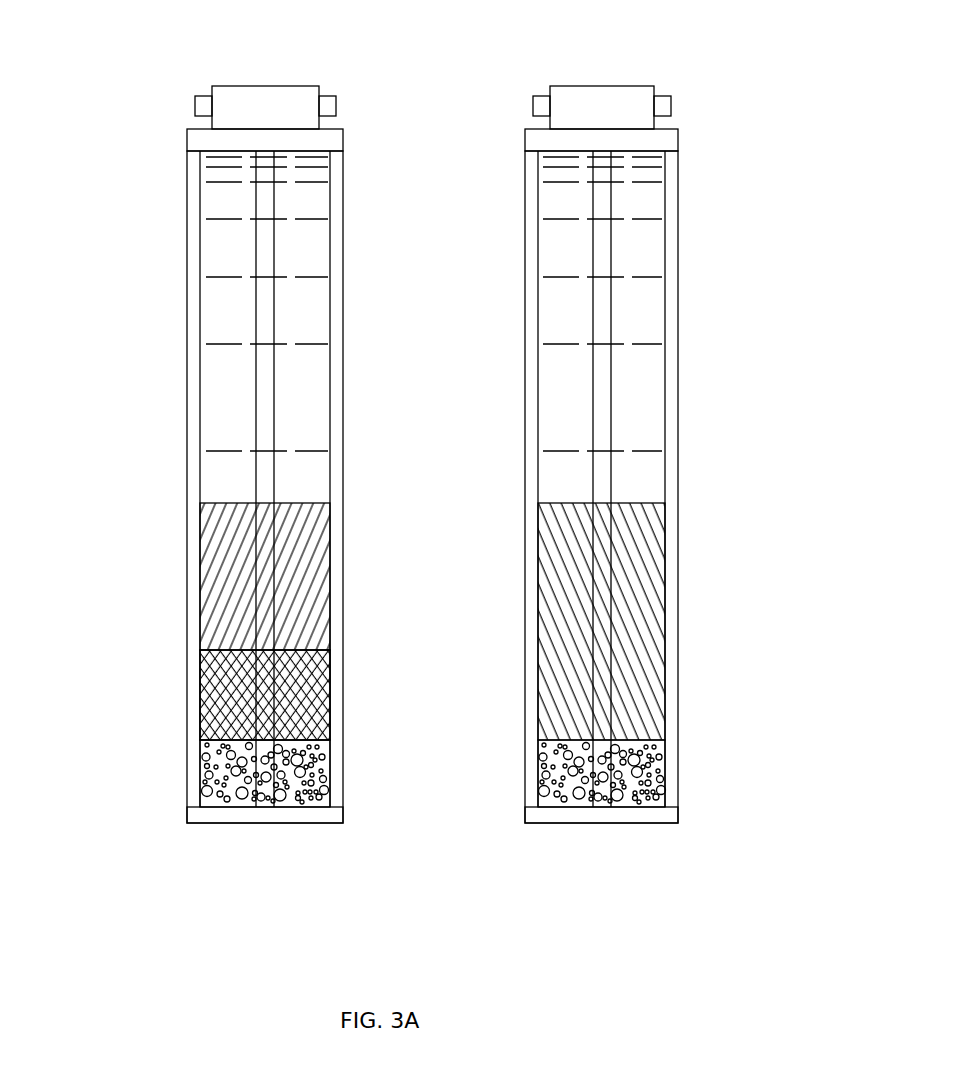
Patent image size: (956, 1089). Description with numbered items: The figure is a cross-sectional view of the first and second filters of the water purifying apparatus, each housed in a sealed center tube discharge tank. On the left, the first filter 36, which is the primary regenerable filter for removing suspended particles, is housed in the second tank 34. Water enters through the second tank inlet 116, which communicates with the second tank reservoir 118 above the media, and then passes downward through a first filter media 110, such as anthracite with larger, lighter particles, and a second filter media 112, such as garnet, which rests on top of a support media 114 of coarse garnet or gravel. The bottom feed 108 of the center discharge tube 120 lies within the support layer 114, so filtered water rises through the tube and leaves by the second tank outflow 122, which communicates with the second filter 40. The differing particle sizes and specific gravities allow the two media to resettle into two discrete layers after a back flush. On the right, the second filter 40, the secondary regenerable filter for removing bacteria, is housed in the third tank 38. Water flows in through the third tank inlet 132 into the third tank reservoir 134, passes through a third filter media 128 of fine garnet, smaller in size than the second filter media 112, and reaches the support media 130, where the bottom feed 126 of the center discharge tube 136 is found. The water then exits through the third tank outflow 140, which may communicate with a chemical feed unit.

The second tank 34 is at (106, 331).
The first filter 36 is at (262, 58).
The third tank 38 is at (746, 316).
The second filter 40 is at (630, 47).
The bottom feed 108 is at (270, 807).
The first filter media 110 is at (198, 533).
The second filter media 112 is at (198, 678).
The support media 114 is at (200, 767).
The second tank inlet 116 is at (196, 107).
The second tank reservoir 118 is at (212, 245).
The center discharge tube 120 is at (268, 245).
The second tank outflow 122 is at (337, 104).
The bottom feed 126 is at (606, 807).
The third filter media 128 is at (647, 602).
The support media 130 is at (663, 773).
The third tank inlet 132 is at (532, 107).
The third tank reservoir 134 is at (643, 250).
The center discharge tube 136 is at (603, 402).
The third tank outflow 140 is at (672, 104).